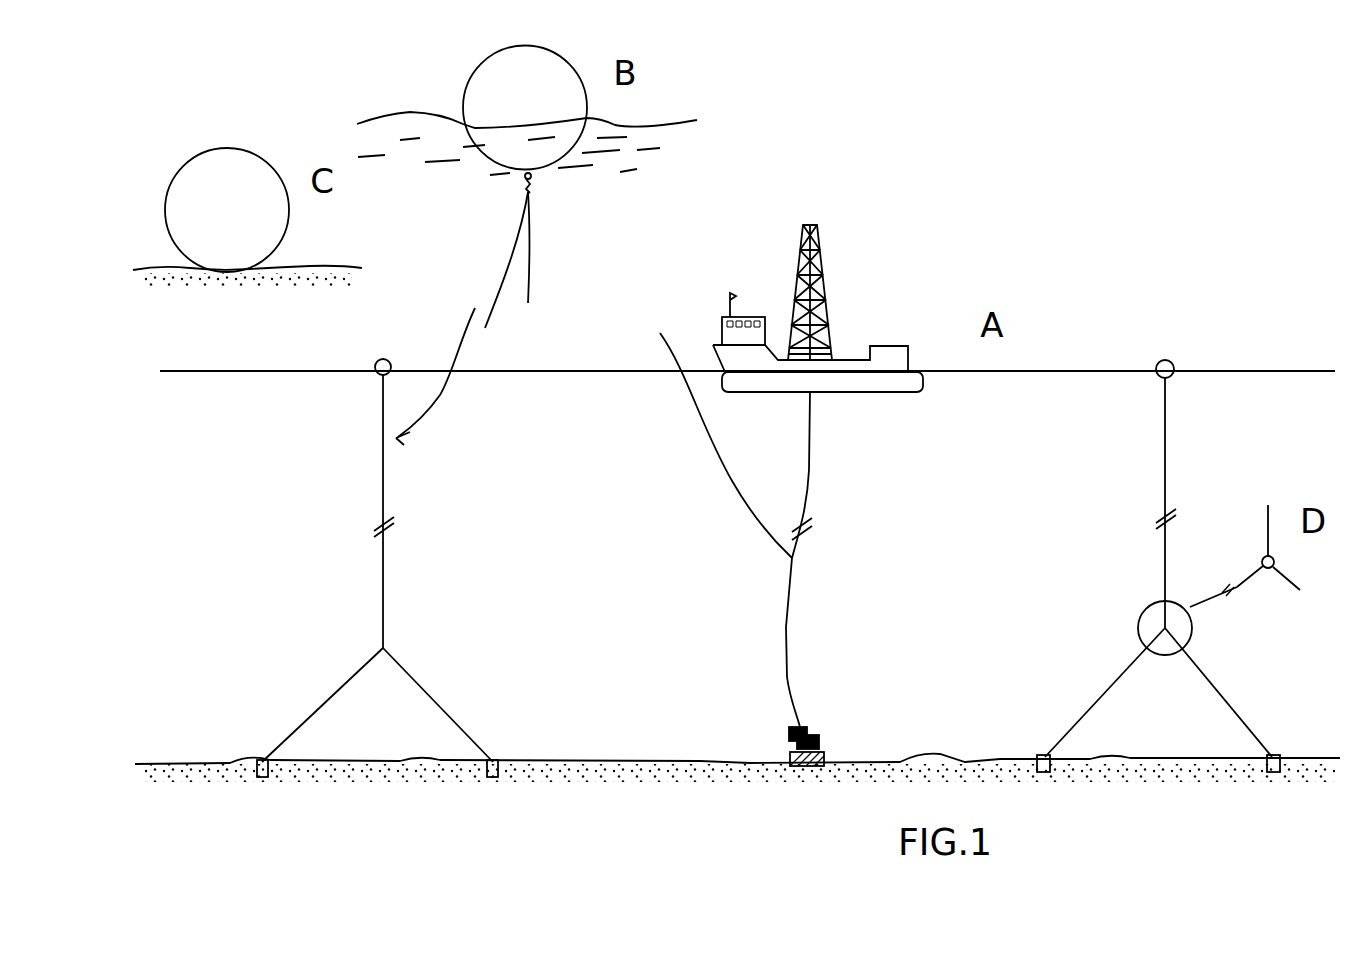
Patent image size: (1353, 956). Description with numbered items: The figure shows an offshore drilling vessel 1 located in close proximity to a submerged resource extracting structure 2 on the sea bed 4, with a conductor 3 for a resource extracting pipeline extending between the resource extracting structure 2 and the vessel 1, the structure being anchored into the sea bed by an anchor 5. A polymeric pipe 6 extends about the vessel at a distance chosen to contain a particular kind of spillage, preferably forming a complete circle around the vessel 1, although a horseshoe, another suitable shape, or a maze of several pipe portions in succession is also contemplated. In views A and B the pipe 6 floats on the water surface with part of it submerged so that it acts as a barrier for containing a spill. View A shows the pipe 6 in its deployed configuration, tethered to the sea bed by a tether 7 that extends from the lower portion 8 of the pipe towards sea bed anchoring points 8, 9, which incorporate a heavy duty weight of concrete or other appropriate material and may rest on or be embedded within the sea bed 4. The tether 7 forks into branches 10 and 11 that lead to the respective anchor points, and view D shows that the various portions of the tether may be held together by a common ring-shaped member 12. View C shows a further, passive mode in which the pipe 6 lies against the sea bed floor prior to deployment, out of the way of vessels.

The offshore drilling vessel 1 is at (862, 327).
The resource extracting structure 2 is at (788, 740).
The cable 3 is at (716, 436).
The seabed 4 is at (292, 277).
The anchor 5 is at (825, 775).
The polymeric pipe 6 is at (467, 78).
The tether 7 is at (383, 598).
The anchoring point 8 is at (495, 780).
The anchoring point 9 is at (258, 780).
The branch 10 is at (300, 725).
The branch 11 is at (448, 718).
The ring-shaped member 12 is at (1275, 572).